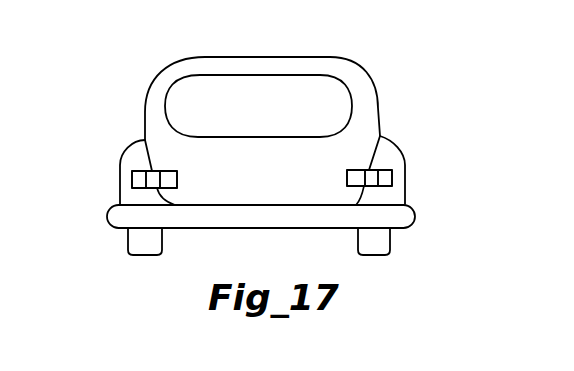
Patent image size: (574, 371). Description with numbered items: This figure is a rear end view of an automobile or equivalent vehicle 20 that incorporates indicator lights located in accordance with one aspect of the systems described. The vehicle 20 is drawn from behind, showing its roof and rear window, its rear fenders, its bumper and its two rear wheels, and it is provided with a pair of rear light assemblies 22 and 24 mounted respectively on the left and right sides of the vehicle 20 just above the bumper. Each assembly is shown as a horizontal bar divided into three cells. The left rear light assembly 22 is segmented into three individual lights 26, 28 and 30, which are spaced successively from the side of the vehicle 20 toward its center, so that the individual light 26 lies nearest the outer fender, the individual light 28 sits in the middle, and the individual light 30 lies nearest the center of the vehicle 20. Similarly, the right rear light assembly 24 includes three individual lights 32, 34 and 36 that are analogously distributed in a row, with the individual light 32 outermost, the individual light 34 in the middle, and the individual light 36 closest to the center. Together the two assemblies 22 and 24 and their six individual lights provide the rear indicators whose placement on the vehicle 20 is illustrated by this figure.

The vehicle 20 is at (378, 90).
The rear light assembly 22 is at (148, 166).
The rear light assembly 24 is at (388, 165).
The individual light 26 is at (132, 179).
The individual light 28 is at (157, 188).
The individual light 30 is at (177, 178).
The individual light 32 is at (393, 178).
The individual light 34 is at (370, 180).
The individual light 36 is at (347, 178).